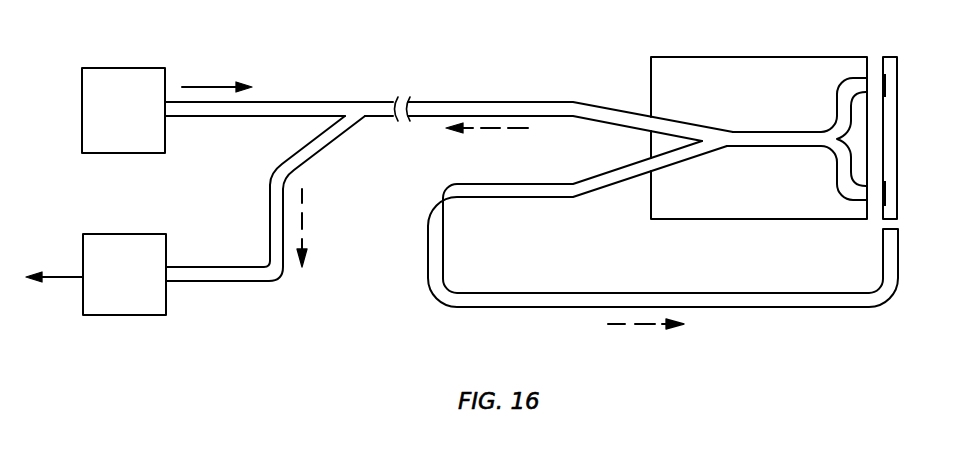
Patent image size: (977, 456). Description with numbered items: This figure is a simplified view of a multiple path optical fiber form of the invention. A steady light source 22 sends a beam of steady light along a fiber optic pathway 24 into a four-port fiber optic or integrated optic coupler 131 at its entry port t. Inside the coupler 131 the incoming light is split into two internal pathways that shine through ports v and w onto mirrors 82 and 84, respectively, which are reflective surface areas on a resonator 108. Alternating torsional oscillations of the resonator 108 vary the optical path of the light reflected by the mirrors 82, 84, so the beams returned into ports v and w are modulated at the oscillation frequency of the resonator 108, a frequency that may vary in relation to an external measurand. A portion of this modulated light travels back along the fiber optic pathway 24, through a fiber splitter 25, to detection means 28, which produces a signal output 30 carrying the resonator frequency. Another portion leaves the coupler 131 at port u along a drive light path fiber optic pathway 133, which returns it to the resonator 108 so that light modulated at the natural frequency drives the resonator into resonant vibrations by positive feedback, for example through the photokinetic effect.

The light source 22 is at (141, 69).
The fiber optic pathway 24 is at (460, 102).
The fiber splitter 25 is at (356, 129).
The detection means 28 is at (151, 317).
The signal output 30 is at (54, 263).
The four port fiber optic or integrated optic coupler 131 is at (688, 57).
The reflective layer or mirror 82 is at (886, 83).
The reflective layer or mirror 84 is at (898, 192).
The resonator 108 is at (902, 219).
The drive light path fiber optic pathway 133 is at (877, 306).
The entry port t is at (642, 104).
The port u is at (644, 184).
The port v is at (855, 66).
The port w is at (859, 214).